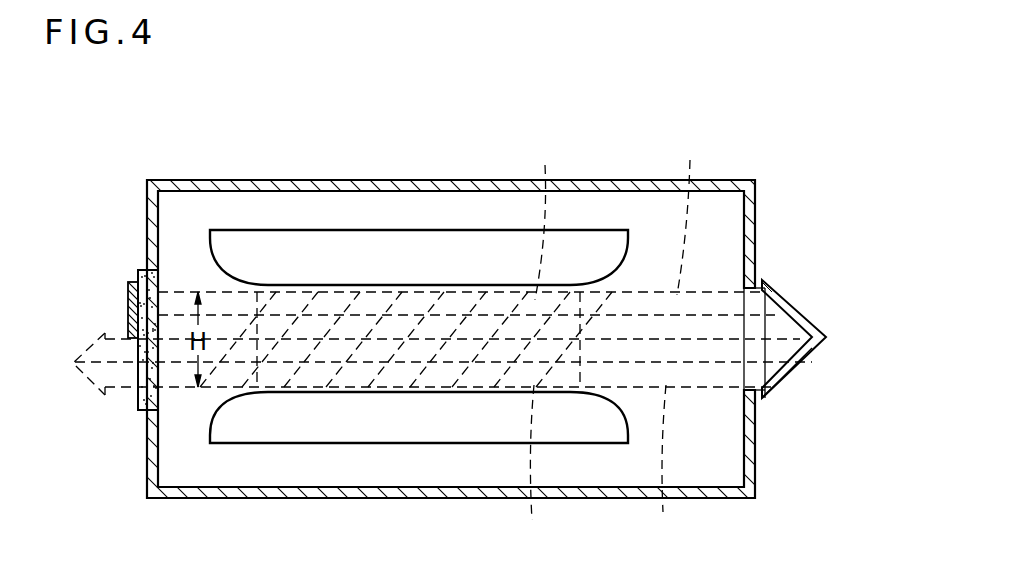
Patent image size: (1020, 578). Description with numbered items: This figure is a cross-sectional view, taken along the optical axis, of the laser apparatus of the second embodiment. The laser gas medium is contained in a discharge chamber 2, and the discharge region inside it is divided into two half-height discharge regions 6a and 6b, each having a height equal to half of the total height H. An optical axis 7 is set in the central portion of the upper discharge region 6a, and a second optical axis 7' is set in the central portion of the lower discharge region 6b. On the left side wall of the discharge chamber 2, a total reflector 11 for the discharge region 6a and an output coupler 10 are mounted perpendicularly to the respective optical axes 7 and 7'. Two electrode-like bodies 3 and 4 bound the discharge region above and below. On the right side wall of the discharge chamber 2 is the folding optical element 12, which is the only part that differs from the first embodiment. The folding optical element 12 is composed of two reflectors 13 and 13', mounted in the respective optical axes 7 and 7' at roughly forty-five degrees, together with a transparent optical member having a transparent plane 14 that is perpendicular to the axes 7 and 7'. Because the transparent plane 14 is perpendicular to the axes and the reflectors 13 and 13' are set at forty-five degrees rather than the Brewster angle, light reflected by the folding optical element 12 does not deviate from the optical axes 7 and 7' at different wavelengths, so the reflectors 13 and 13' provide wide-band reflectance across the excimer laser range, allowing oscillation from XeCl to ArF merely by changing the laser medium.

The discharge chamber 2 is at (268, 191).
The upper lens 3 is at (434, 242).
The lower lens 4 is at (394, 432).
The discharge region 6a is at (551, 218).
The discharge region 6b is at (536, 472).
The optical axis 7 is at (685, 213).
The optical axis 7' is at (668, 465).
The output coupler 10 is at (137, 398).
The total reflector 11 is at (127, 290).
The folding optical element 12 is at (766, 284).
The reflector 13 is at (802, 340).
The reflector 13' is at (800, 386).
The transparent plane 14 is at (748, 380).